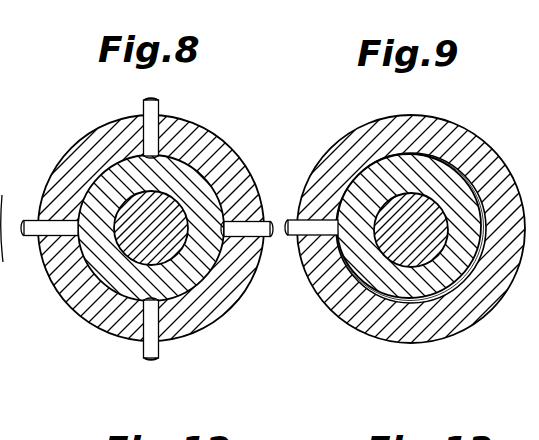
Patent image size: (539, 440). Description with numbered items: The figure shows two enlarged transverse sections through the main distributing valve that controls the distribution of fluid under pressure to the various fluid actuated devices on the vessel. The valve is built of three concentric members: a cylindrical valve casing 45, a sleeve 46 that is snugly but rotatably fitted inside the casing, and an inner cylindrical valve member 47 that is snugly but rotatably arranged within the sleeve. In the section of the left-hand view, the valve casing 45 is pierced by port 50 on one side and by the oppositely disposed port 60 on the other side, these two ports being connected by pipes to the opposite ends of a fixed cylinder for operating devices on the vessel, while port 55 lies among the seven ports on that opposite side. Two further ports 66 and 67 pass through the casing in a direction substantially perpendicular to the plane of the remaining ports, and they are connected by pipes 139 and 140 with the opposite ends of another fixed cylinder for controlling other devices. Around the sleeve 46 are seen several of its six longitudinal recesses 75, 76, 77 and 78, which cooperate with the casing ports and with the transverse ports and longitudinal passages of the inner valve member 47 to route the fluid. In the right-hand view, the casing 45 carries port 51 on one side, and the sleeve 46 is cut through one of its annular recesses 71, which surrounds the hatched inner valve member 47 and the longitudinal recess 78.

In FIG. 8, the valve casing 45 is at (221, 153).
In FIG. 9, the valve casing 45 is at (413, 128).
In FIG. 8, the sleeve 46 is at (95, 300).
In FIG. 9, the sleeve 46 is at (496, 180).
In FIG. 8, the inner cylindrical valve member 47 is at (128, 216).
In FIG. 9, the inner cylindrical valve member 47 is at (400, 252).
In FIG. 8, the port 50 is at (40, 220).
In FIG. 9, the port 51 is at (313, 220).
In FIG. 8, the port 55 is at (0, 215).
In FIG. 8, the port 60 is at (253, 224).
In FIG. 8, the port 66 is at (148, 333).
In FIG. 8, the port 67 is at (149, 101).
In FIG. 9, the annular recess 71 is at (447, 164).
In FIG. 8, the longitudinal recess 75 is at (158, 301).
In FIG. 8, the longitudinal recess 76 is at (143, 155).
In FIG. 8, the longitudinal recess 77 is at (216, 245).
In FIG. 8, the longitudinal recess 78 is at (75, 255).
In FIG. 9, the longitudinal recess 78 is at (337, 248).
In FIG. 8, the pipe 139 is at (156, 351).
In FIG. 8, the pipe 140 is at (158, 103).